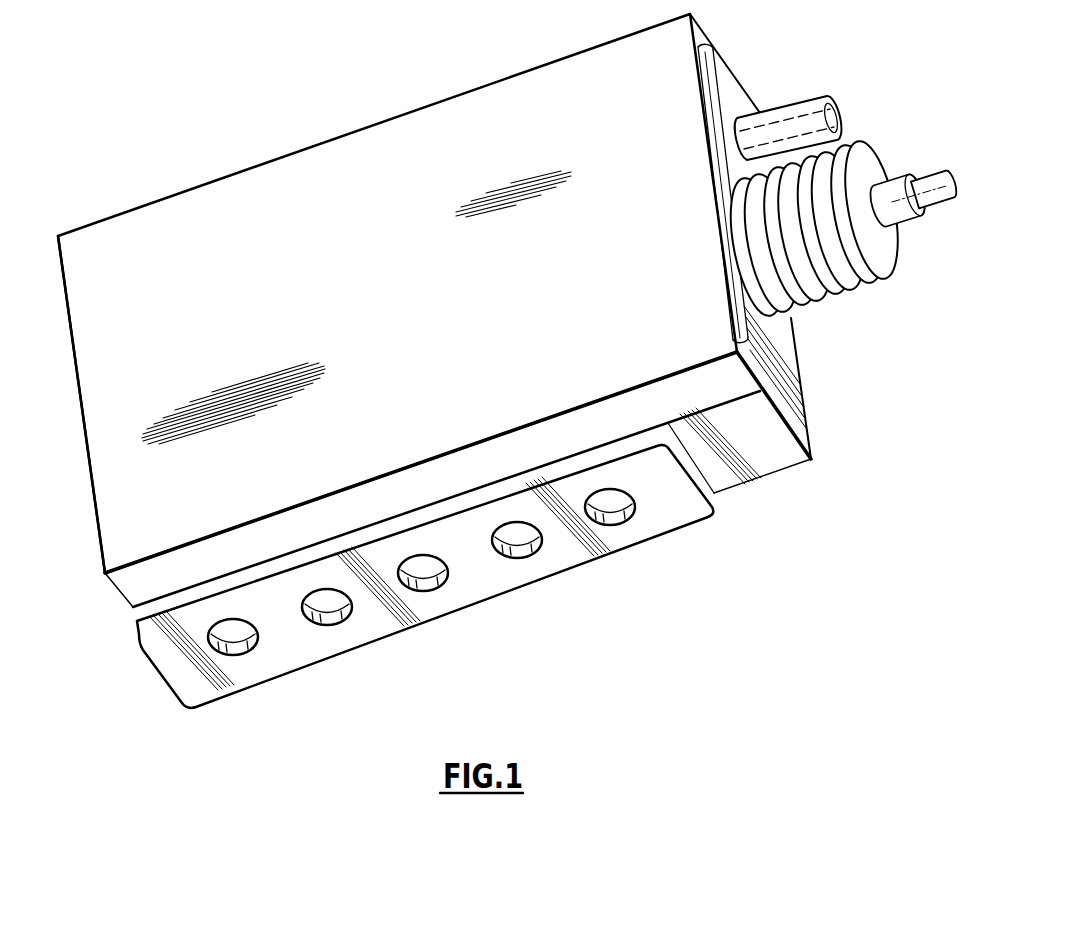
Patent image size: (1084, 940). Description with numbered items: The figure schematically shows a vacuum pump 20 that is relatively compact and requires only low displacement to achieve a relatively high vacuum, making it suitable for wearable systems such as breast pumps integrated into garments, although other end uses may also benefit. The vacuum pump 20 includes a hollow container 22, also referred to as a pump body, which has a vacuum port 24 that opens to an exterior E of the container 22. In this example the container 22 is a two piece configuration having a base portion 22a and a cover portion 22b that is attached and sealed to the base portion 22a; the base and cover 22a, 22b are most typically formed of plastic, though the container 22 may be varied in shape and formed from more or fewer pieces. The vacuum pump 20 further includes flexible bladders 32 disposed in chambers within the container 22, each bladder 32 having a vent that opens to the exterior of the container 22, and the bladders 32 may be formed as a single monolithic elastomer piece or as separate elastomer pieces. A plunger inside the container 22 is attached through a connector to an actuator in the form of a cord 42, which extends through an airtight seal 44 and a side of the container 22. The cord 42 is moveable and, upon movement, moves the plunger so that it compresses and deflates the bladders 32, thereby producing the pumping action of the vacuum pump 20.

The vacuum pump 20 is at (148, 782).
The hollow container 22 is at (767, 468).
The base portion 22a is at (798, 349).
The cover portion 22b is at (89, 566).
The vacuum port 24 is at (796, 104).
The flexible bladders 32 is at (224, 643).
The cord 42 is at (926, 176).
The airtight seal 44 is at (903, 247).
The exterior E is at (864, 118).